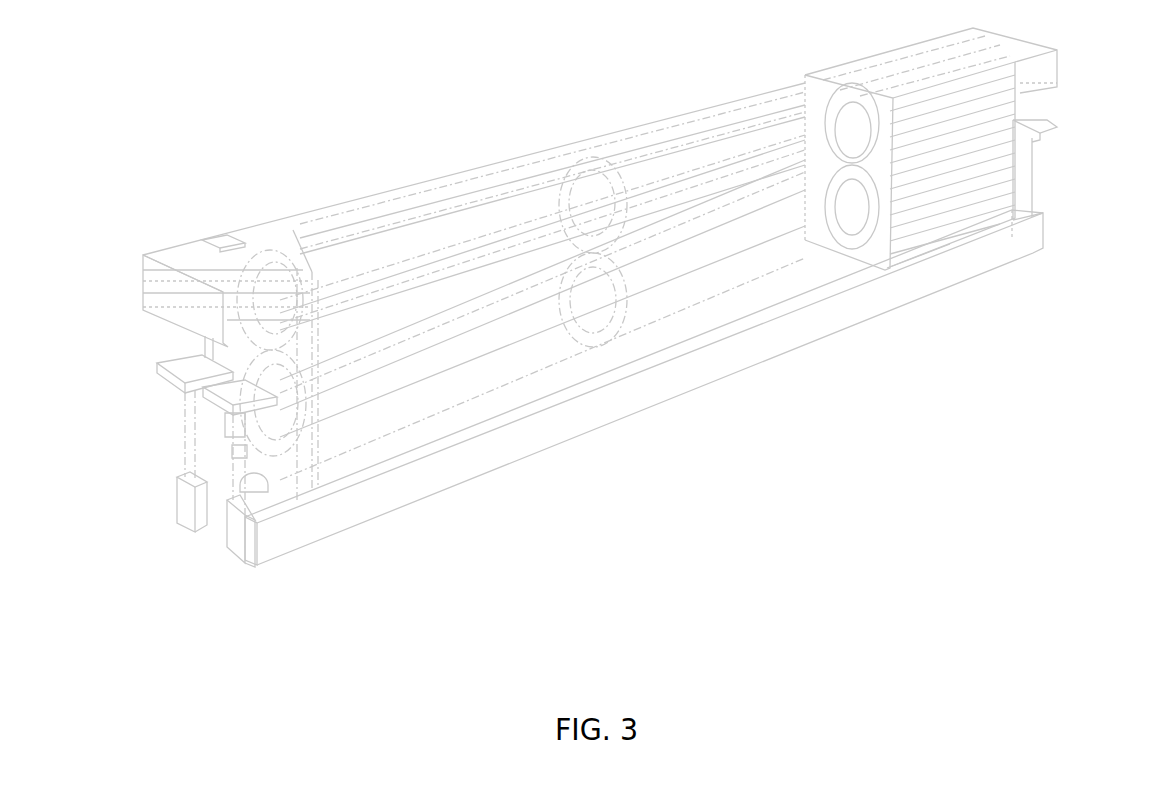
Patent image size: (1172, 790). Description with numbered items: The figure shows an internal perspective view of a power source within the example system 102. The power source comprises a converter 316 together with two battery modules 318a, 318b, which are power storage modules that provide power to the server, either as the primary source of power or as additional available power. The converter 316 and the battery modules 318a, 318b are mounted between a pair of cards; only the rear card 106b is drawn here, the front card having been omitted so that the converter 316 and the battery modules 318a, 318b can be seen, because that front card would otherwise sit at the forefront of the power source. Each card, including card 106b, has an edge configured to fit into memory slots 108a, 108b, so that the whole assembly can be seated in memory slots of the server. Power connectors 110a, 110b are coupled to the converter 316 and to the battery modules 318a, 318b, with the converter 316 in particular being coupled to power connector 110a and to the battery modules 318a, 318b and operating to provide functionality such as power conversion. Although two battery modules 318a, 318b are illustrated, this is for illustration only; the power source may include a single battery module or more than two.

The system 102 is at (341, 129).
The card 106b is at (313, 218).
The memory slot 108a is at (247, 547).
The memory slot 108b is at (190, 512).
The power connector 110a is at (1060, 71).
The power connector 110b is at (142, 280).
The converter 316 is at (975, 223).
The battery module 318a is at (607, 187).
The battery module 318b is at (560, 290).